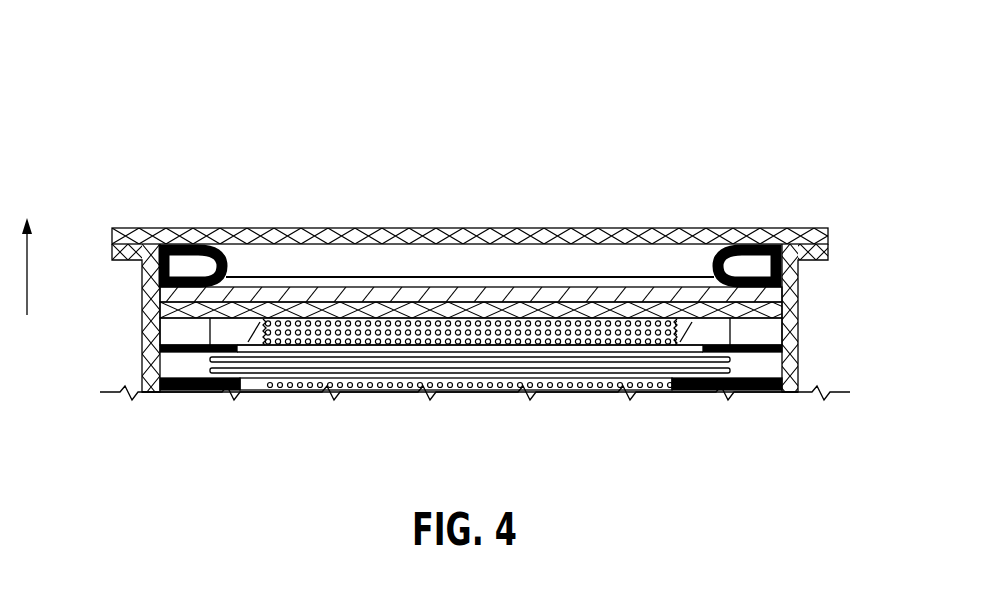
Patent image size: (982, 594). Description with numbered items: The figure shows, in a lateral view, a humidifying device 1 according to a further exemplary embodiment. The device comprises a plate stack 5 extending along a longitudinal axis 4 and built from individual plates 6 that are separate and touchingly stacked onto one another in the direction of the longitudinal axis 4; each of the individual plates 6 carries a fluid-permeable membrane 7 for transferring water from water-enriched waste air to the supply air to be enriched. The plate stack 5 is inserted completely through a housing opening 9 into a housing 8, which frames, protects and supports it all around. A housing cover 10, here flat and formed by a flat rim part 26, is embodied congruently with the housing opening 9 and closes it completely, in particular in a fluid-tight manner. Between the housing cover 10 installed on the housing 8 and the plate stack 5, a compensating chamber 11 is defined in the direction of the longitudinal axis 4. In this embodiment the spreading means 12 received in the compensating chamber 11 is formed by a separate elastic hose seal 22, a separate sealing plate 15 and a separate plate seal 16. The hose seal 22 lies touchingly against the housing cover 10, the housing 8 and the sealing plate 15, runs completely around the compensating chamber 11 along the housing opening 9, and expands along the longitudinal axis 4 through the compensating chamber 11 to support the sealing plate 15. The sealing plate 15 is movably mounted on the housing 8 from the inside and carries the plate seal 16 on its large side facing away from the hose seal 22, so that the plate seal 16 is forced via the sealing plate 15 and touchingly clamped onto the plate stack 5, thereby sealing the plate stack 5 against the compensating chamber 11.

The humidifying device 1 is at (818, 150).
The longitudinal axis 4 is at (30, 254).
The plate stack 5 is at (471, 406).
The individual plates 6 is at (471, 406).
The fluid-permeable membrane 7 is at (387, 380).
The housing 8 is at (778, 313).
The housing opening 9 is at (470, 199).
The housing cover 10 is at (470, 199).
The compensating chamber 11 is at (452, 268).
The spreading means 12 is at (470, 207).
The sealing plate 15 is at (780, 295).
The plate seal 16 is at (747, 323).
The hose seal 22 is at (710, 267).
The flat rim part 26 is at (255, 236).